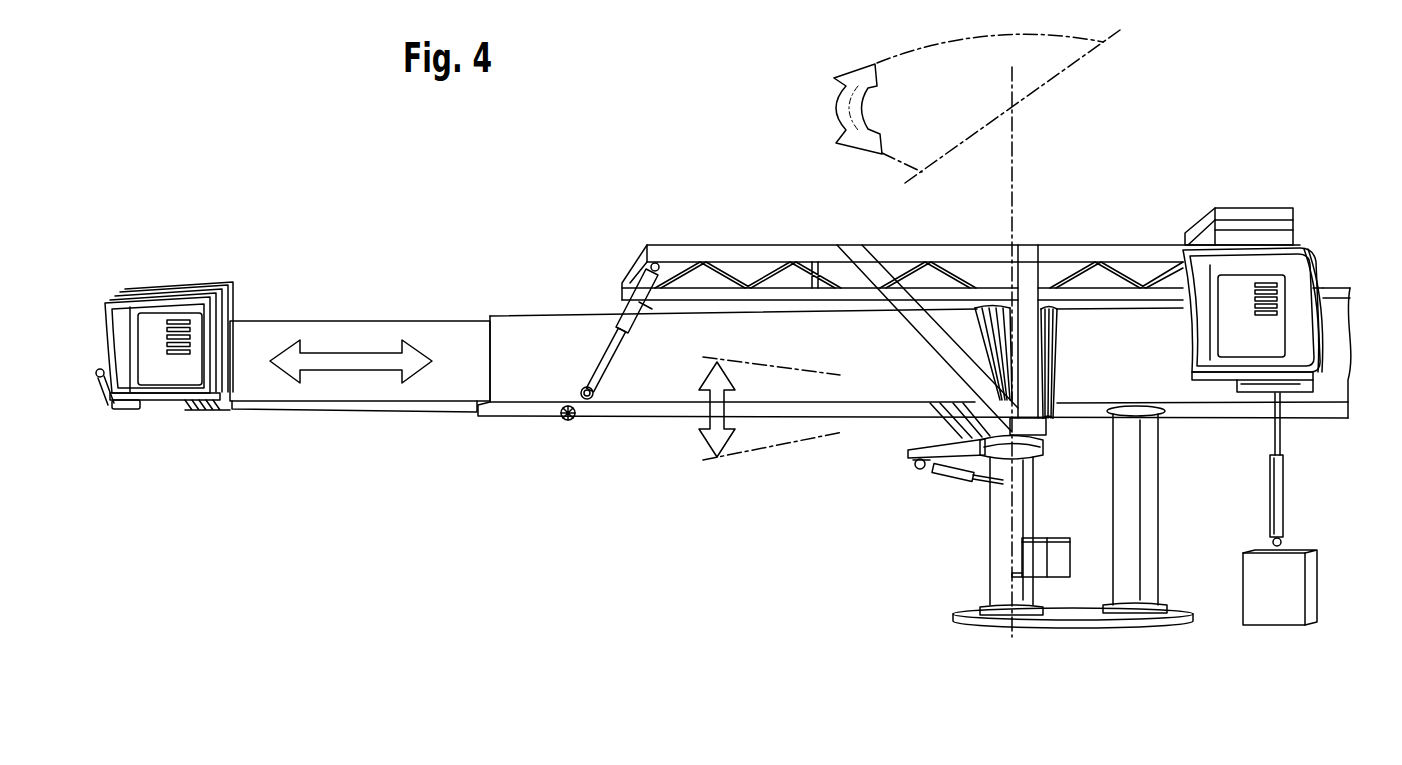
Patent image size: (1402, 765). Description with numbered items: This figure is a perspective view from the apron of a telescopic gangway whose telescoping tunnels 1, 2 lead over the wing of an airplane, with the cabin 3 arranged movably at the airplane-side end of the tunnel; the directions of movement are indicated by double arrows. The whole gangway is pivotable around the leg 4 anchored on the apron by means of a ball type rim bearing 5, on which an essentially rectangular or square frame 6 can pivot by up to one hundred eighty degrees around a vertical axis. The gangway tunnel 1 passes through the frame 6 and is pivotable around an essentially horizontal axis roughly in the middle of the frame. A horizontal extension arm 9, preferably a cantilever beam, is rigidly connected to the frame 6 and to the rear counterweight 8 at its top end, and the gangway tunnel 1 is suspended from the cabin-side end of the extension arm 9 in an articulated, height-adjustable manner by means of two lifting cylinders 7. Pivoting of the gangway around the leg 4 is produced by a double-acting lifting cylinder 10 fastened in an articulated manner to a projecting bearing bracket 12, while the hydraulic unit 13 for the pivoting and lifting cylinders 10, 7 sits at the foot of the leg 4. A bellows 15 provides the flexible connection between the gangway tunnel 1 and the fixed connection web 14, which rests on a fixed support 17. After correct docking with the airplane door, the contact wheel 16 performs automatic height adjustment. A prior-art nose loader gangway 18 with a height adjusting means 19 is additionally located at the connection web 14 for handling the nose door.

The gangway tunnel 1 is at (527, 407).
The telescoping tunnel 2 is at (360, 405).
The cabin 3 is at (180, 410).
The leg 4 is at (1000, 553).
The ball type rim bearing 5 is at (1040, 448).
The frame 6 is at (1027, 265).
The lifting cylinders 7 is at (605, 372).
The rear counterweight 8 is at (1250, 213).
The extension arm 9 is at (725, 250).
The lifting cylinder 10 is at (955, 478).
The bearing bracket 12 is at (935, 434).
The hydraulic unit 13 is at (1060, 573).
The fixed connection web 14 is at (1330, 418).
The bellows 15 is at (1060, 332).
The contact wheel 16 is at (100, 368).
The fixed support 17 is at (1150, 528).
The nose loader gangway 18 is at (1335, 233).
The height adjusting means 19 is at (1285, 503).